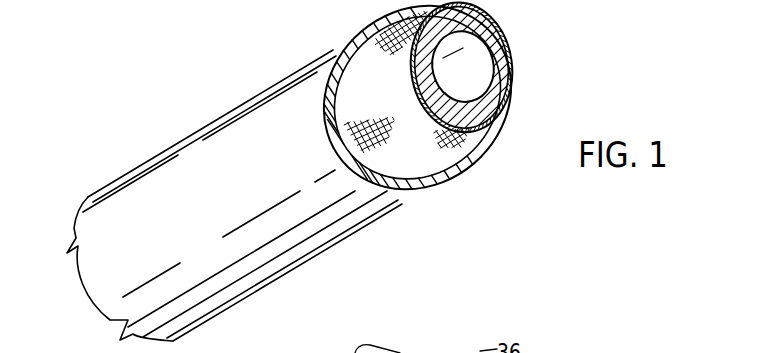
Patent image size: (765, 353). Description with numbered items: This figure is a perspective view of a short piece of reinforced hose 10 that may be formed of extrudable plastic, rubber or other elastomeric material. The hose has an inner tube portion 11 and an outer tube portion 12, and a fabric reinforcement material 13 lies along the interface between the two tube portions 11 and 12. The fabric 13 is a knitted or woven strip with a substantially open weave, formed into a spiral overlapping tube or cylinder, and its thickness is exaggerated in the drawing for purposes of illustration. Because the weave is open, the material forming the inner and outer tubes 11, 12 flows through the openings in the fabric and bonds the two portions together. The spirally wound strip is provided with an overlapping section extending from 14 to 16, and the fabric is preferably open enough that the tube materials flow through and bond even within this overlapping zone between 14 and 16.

The reinforced hose 10 is at (386, 223).
The inner tube portion 11 is at (500, 77).
The outer tube portion 12 is at (432, 184).
The fabric reinforcement material 13 is at (505, 108).
The start of overlapping section 14 is at (440, 124).
The end of overlapping section 16 is at (482, 129).